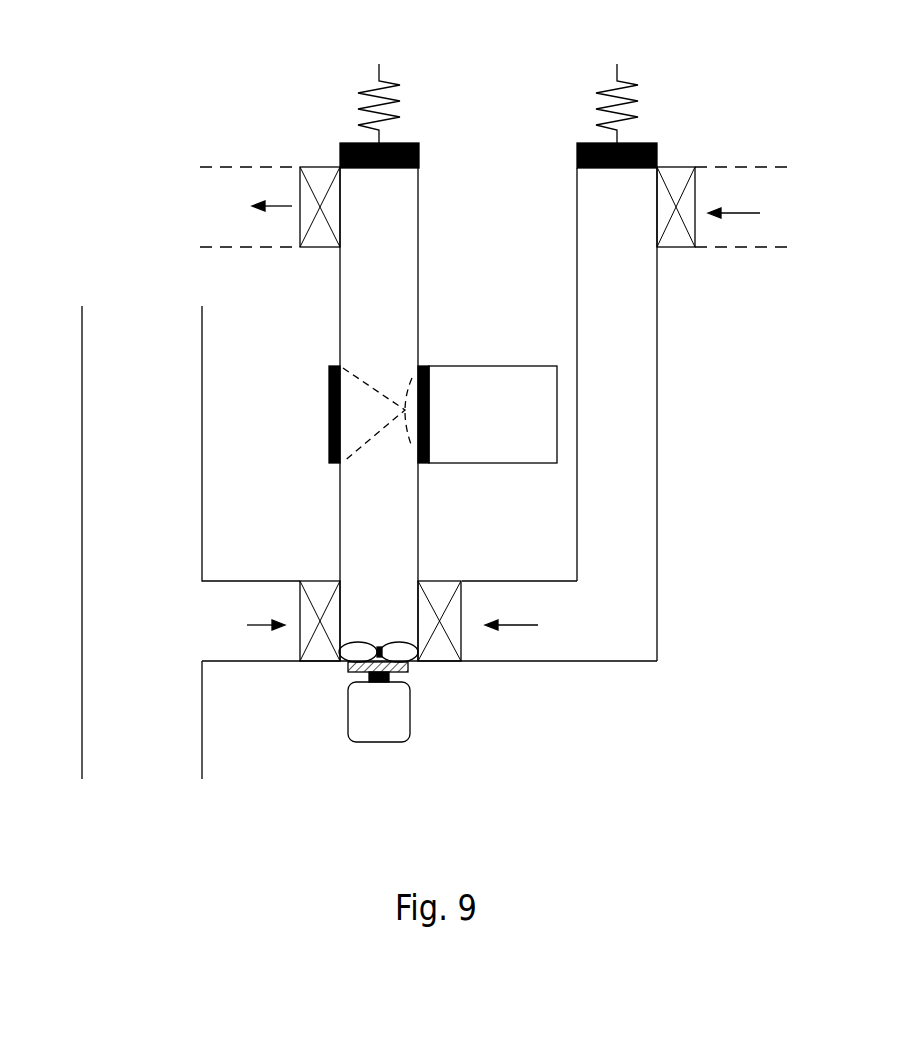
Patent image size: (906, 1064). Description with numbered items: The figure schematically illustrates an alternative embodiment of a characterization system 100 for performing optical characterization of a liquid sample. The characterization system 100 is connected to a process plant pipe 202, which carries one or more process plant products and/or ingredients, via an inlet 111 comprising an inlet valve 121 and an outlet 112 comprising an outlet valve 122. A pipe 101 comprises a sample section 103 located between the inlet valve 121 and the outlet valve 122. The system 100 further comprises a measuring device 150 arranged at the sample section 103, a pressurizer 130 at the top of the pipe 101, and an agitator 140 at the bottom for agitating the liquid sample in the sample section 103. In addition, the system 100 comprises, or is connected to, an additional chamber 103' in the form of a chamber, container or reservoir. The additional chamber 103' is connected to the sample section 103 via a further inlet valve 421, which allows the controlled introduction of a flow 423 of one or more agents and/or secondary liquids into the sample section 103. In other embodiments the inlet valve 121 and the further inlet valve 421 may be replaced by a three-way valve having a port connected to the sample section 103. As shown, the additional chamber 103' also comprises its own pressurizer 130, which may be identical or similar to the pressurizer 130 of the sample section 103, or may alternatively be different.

The characterization system 100 is at (605, 730).
The pipe 101 is at (418, 251).
The sample section 103 is at (309, 414).
The additional chamber 103' is at (672, 374).
The inlet 111 is at (243, 625).
The outlet 112 is at (247, 206).
The inlet valve 121 is at (317, 592).
The outlet valve 122 is at (317, 177).
The pressurizer 130 is at (420, 150).
The agitator 140 is at (357, 650).
The measuring device 150 is at (458, 366).
The process plant pipe 202 is at (98, 441).
The further inlet valve 421 is at (675, 238).
The flow 423 is at (645, 419).